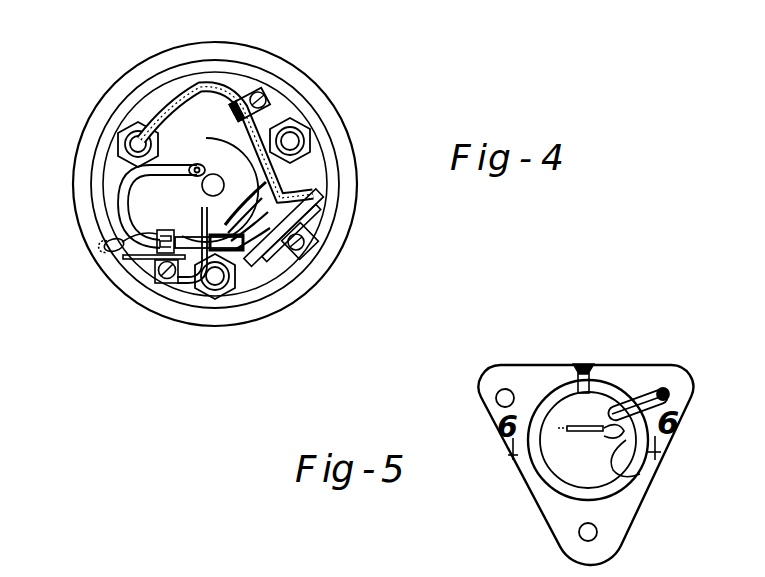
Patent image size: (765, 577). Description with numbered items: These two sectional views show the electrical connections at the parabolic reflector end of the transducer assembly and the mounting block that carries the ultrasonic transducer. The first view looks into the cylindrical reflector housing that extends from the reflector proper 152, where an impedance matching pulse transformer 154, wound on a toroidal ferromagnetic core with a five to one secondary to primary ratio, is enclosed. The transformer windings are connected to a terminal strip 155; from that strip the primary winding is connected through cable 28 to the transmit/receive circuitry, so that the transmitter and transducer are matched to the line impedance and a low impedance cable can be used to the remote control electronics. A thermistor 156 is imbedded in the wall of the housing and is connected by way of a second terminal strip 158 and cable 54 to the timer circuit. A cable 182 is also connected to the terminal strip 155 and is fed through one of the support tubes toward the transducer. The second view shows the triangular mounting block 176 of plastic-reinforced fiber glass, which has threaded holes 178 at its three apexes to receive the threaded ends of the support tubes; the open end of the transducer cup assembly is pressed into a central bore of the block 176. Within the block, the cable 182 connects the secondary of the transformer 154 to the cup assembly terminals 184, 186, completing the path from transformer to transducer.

In FIG. 4, the cable 28 is at (130, 203).
In FIG. 4, the cable 54 is at (192, 286).
In FIG. 4, the reflector proper 152 is at (340, 143).
In FIG. 4, the impedance matching pulse transformer 154 is at (205, 149).
In FIG. 4, the terminal strip 155 is at (320, 194).
In FIG. 4, the thermistor 156 is at (123, 255).
In FIG. 4, the second terminal strip 158 is at (142, 262).
In FIG. 5, the triangular mounting block 176 is at (633, 372).
In FIG. 5, the threaded holes 178 is at (496, 404).
In FIG. 4, the cable 182 is at (214, 84).
In FIG. 5, the cable 182 is at (667, 368).
In FIG. 5, the cup assembly terminal 184 is at (612, 478).
In FIG. 5, the cup assembly terminal 186 is at (581, 431).